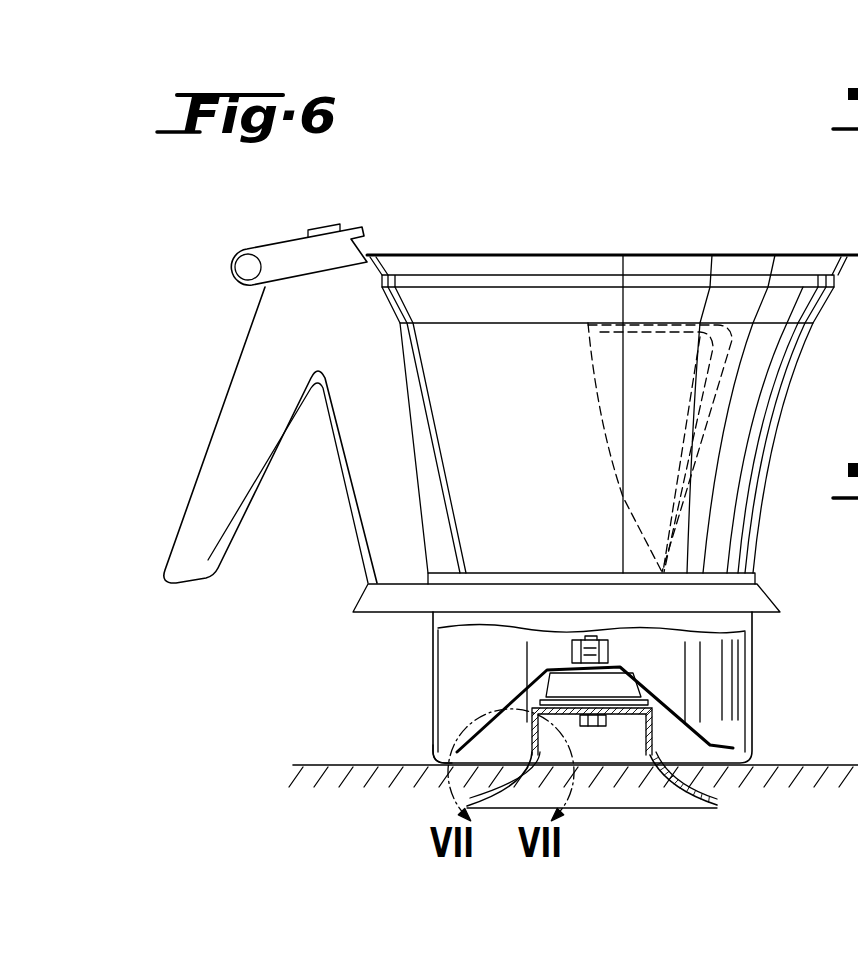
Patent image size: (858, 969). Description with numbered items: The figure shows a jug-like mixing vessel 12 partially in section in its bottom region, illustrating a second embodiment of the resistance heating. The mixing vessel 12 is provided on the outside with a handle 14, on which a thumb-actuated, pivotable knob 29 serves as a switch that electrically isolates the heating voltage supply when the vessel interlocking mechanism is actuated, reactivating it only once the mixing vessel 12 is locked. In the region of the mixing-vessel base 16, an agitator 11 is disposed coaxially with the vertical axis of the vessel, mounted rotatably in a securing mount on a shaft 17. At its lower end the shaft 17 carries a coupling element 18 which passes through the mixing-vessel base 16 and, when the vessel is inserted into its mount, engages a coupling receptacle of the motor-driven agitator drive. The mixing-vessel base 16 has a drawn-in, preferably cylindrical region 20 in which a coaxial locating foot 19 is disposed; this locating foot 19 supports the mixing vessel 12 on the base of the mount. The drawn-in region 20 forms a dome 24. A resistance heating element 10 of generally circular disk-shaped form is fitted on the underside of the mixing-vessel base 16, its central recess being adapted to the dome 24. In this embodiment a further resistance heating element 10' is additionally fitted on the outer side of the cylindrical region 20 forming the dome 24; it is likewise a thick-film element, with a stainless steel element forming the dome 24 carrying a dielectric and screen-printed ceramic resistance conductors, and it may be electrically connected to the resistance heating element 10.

The resistance heating element 10 is at (573, 825).
The further resistance heating element 10' is at (561, 813).
The agitator 11 is at (712, 735).
The mixing vessel 12 is at (667, 243).
The handle 14 is at (245, 427).
The mixing-vessel base 16 is at (440, 765).
The shaft 17 is at (605, 660).
The coupling element 18 is at (598, 727).
The locating foot 19 is at (717, 806).
The drawn-in cylindrical region 20 is at (680, 720).
The dome 24 is at (653, 708).
The pivotable knob 29 is at (283, 257).